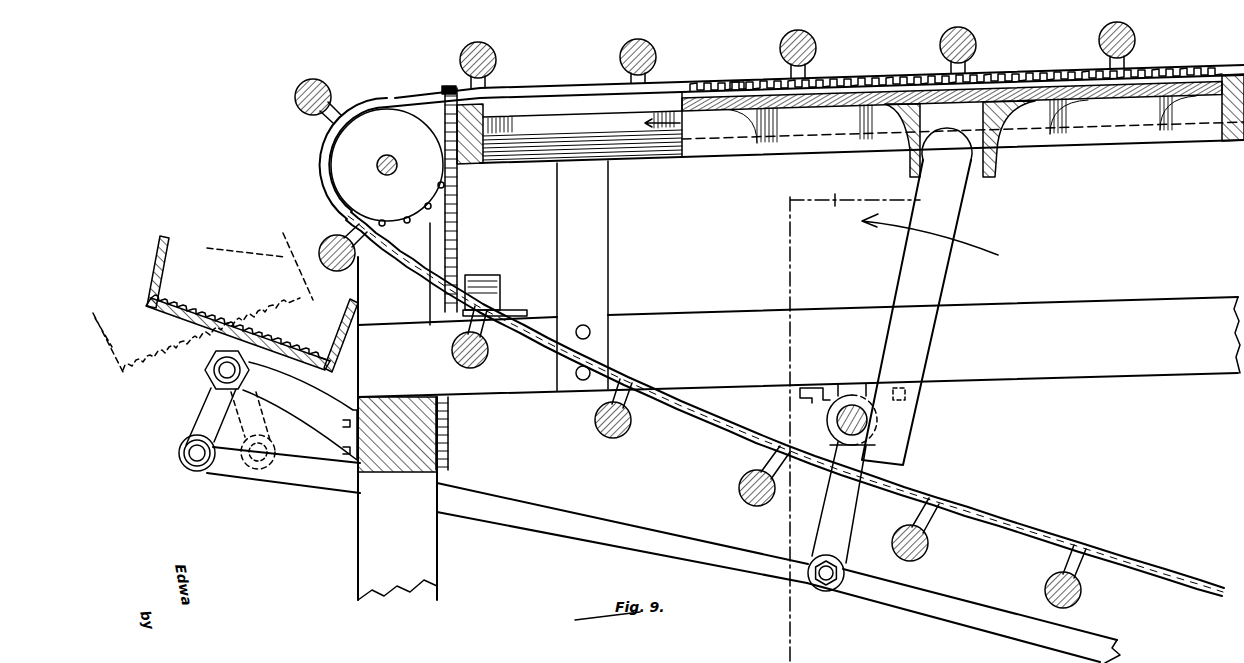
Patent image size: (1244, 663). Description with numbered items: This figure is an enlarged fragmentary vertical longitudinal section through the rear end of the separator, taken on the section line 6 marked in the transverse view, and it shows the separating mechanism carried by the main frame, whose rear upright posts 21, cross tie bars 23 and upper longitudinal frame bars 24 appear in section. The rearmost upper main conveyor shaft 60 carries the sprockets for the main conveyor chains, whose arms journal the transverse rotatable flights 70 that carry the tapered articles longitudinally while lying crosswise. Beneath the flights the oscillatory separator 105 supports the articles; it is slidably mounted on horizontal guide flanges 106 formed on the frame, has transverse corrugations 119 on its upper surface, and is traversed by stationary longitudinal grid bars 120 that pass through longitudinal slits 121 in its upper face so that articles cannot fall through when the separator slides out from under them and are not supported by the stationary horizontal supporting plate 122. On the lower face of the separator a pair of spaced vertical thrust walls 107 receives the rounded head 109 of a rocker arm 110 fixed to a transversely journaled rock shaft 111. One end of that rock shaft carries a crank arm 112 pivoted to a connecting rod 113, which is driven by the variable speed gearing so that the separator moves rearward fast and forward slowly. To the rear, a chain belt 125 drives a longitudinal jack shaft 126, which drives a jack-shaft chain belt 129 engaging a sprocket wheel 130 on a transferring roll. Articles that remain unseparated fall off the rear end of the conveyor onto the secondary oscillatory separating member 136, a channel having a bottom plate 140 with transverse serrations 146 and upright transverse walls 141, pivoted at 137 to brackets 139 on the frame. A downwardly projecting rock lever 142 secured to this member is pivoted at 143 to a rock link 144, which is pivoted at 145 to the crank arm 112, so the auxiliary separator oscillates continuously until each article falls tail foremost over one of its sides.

The chain 6 is at (918, 74).
The rear upright posts 21 is at (397, 428).
The cross tie bars 23 is at (398, 470).
The upper longitudinal frame bars 24 is at (799, 412).
The main conveyor shaft 60 is at (395, 173).
The rotatable flights 70 is at (1098, 40).
The oscillatory separator 105 is at (963, 120).
The guide flanges 106 is at (628, 143).
The thrust walls 107 is at (907, 165).
The rounded head 109 is at (966, 168).
The rocker arm 110 is at (930, 312).
The rock shaft 111 is at (851, 404).
The crank arm 112 is at (840, 530).
The connecting rod 113 is at (950, 615).
The transverse corrugations 119 is at (887, 78).
The grid bars 120 is at (563, 88).
The longitudinal slits 121 is at (737, 82).
The stationary horizontal supporting plate 122 is at (1237, 75).
The chain belt 125 is at (449, 255).
The longitudinal jack shaft 126 is at (503, 292).
The jack-shaft chain belts 129 is at (458, 209).
The sprocket wheels 130 is at (470, 118).
The secondary oscillatory separating member 136 is at (160, 288).
The pivot 137 is at (214, 376).
The brackets 139 is at (268, 382).
The bottom plate 140 is at (168, 312).
The upright transverse walls 141 is at (166, 252).
The rock lever 142 is at (205, 420).
The pivot 143 is at (196, 460).
The rock link 144 is at (550, 526).
The pivot 145 is at (830, 578).
The transverse serrations 146 is at (230, 318).